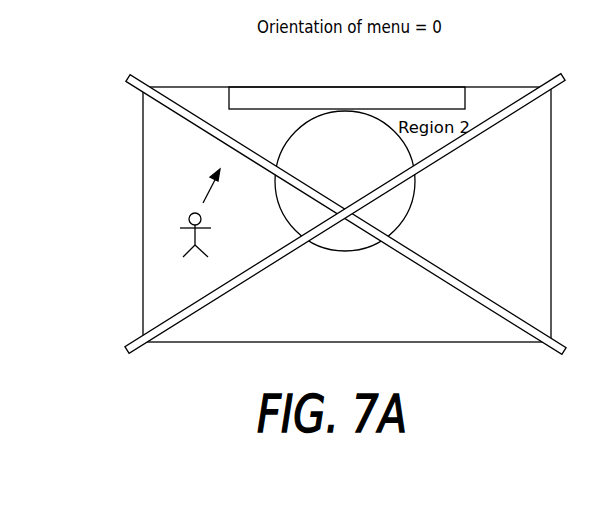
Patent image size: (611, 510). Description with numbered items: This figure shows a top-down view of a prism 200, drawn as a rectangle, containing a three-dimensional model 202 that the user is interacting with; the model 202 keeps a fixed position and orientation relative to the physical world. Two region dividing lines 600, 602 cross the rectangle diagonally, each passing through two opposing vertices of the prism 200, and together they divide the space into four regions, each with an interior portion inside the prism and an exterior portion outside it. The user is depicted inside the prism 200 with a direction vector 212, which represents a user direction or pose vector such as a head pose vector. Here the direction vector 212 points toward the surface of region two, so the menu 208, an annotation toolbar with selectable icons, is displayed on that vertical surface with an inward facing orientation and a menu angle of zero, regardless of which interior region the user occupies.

The prism 200 is at (552, 173).
The menu 208 is at (404, 86).
The 3D model 202 is at (412, 200).
The direction vector 212 is at (205, 192).
The region dividing line 600 is at (138, 77).
The region dividing line 602 is at (553, 75).